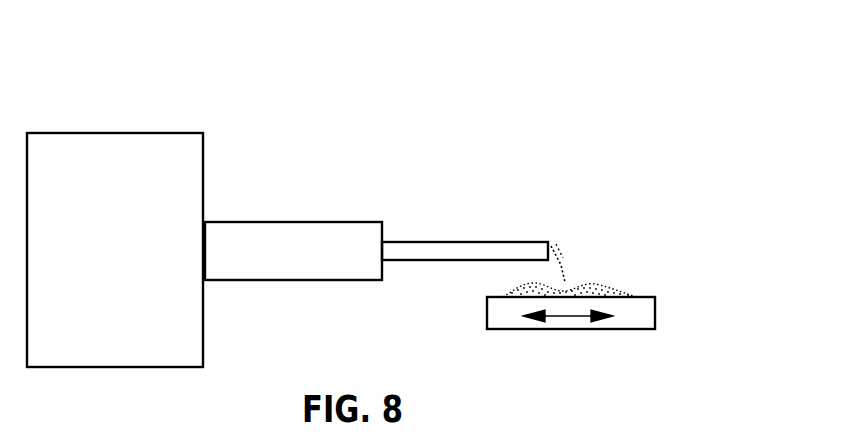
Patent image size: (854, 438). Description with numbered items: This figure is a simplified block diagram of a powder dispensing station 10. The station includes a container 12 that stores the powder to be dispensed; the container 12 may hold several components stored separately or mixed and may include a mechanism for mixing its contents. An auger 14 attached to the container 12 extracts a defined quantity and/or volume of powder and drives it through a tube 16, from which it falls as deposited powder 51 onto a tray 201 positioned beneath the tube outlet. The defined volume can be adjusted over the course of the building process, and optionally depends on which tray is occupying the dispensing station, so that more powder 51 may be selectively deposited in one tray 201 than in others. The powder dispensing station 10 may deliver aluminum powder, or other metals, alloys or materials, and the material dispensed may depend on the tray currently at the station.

The powder dispensing station 10 is at (488, 82).
The container 12 is at (99, 133).
The auger 14 is at (263, 222).
The tube 16 is at (422, 242).
The powder 51 is at (588, 283).
The tray 201 is at (655, 315).